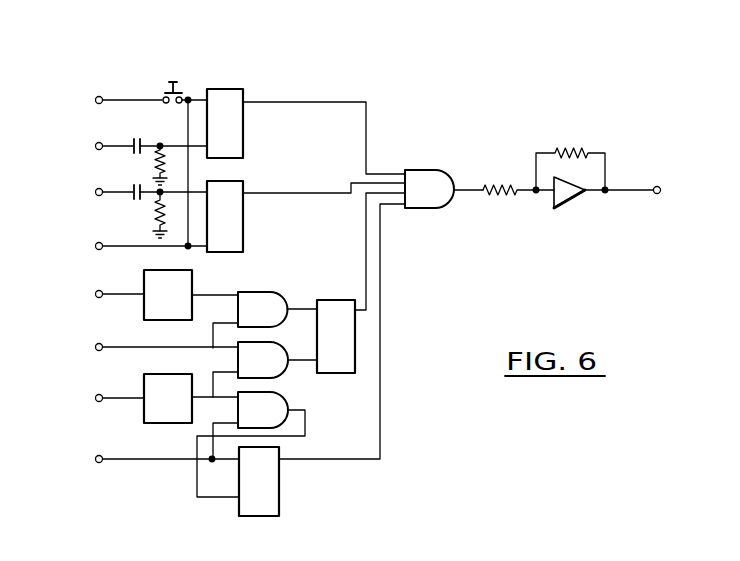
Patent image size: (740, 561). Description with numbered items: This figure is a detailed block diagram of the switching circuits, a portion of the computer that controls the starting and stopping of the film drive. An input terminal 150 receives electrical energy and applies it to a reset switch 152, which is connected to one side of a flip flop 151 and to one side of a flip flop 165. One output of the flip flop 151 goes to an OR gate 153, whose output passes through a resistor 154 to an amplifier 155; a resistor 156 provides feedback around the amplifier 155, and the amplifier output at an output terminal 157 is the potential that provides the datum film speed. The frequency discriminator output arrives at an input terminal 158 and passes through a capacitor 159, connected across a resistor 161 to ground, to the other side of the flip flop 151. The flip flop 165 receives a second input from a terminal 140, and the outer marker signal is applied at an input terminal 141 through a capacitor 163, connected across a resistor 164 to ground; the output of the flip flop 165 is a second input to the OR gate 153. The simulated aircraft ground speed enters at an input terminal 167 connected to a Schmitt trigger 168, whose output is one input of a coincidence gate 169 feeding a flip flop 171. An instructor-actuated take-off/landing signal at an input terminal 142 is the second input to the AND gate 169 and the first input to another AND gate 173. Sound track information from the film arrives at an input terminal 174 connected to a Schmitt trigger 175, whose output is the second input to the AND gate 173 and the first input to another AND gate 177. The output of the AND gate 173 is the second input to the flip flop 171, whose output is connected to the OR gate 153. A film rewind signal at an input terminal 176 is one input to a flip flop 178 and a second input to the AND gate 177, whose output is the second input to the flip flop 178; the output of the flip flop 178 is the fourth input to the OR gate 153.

The terminal 140 is at (97, 243).
The input terminal 141 is at (97, 189).
The input terminal 142 is at (97, 344).
The input terminal 150 is at (97, 97).
The flip flop 151 is at (243, 92).
The reset switch 152 is at (167, 77).
The OR gate 153 is at (430, 170).
The resistor 154 is at (508, 182).
The amplifier 155 is at (570, 206).
The resistor 156 is at (588, 148).
The output terminal 157 is at (658, 187).
The input terminal 158 is at (97, 143).
The capacitor 159 is at (140, 154).
The resistor 161 is at (167, 167).
The capacitor 163 is at (141, 200).
The resistor 164 is at (168, 212).
The flip flop 165 is at (243, 188).
The input terminal 167 is at (97, 291).
The Schmitt trigger 168 is at (192, 278).
The coincidence gate 169 is at (262, 292).
The flip flop 171 is at (349, 272).
The AND gate 173 is at (273, 343).
The input terminal 174 is at (97, 395).
The Schmitt trigger 175 is at (175, 377).
The input terminal 176 is at (98, 456).
The AND gate 177 is at (290, 403).
The flip flop 178 is at (279, 497).